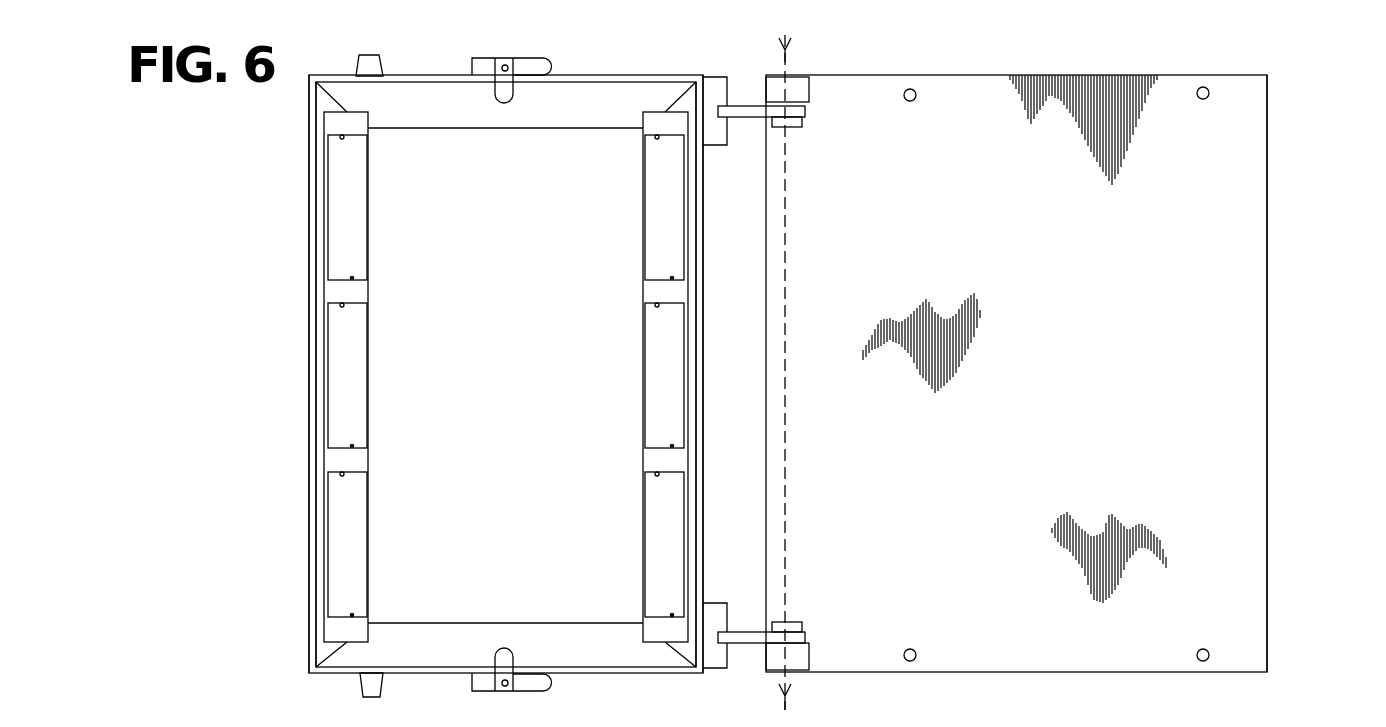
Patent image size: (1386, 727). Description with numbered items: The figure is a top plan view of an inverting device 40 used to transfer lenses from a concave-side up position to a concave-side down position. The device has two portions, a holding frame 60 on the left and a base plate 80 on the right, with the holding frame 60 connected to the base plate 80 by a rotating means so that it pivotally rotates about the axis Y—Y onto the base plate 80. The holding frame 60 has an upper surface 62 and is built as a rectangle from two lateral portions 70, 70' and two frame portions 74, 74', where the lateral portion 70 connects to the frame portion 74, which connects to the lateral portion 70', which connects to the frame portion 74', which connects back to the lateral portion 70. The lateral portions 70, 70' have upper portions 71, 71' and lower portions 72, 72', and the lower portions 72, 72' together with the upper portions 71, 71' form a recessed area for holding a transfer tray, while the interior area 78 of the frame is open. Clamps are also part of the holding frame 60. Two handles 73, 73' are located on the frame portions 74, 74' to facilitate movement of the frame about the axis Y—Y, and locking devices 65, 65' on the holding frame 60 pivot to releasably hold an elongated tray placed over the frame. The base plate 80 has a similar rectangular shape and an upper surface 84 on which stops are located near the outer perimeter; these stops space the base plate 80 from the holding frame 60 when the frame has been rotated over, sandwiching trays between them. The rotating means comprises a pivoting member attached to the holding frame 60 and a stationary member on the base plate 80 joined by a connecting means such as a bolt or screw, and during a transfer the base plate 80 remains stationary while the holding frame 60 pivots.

The inverting device 40 is at (1099, 62).
The holding frame 60 is at (272, 163).
The upper surface 62 is at (600, 98).
The locking device 65 is at (512, 65).
The locking device 65' is at (512, 687).
The lateral portion 70 is at (280, 374).
The lateral portion 70' is at (731, 374).
The upper portion 71 is at (293, 374).
The upper portion 71' is at (725, 374).
The lower portion 72 is at (371, 377).
The lower portion 72' is at (644, 377).
The handle 73 is at (350, 55).
The handle 73' is at (360, 700).
The frame portion 74 is at (506, 73).
The frame portion 74' is at (506, 672).
The interior area 78 is at (458, 605).
The base plate 80 is at (1297, 256).
The upper surface 84 is at (1268, 540).